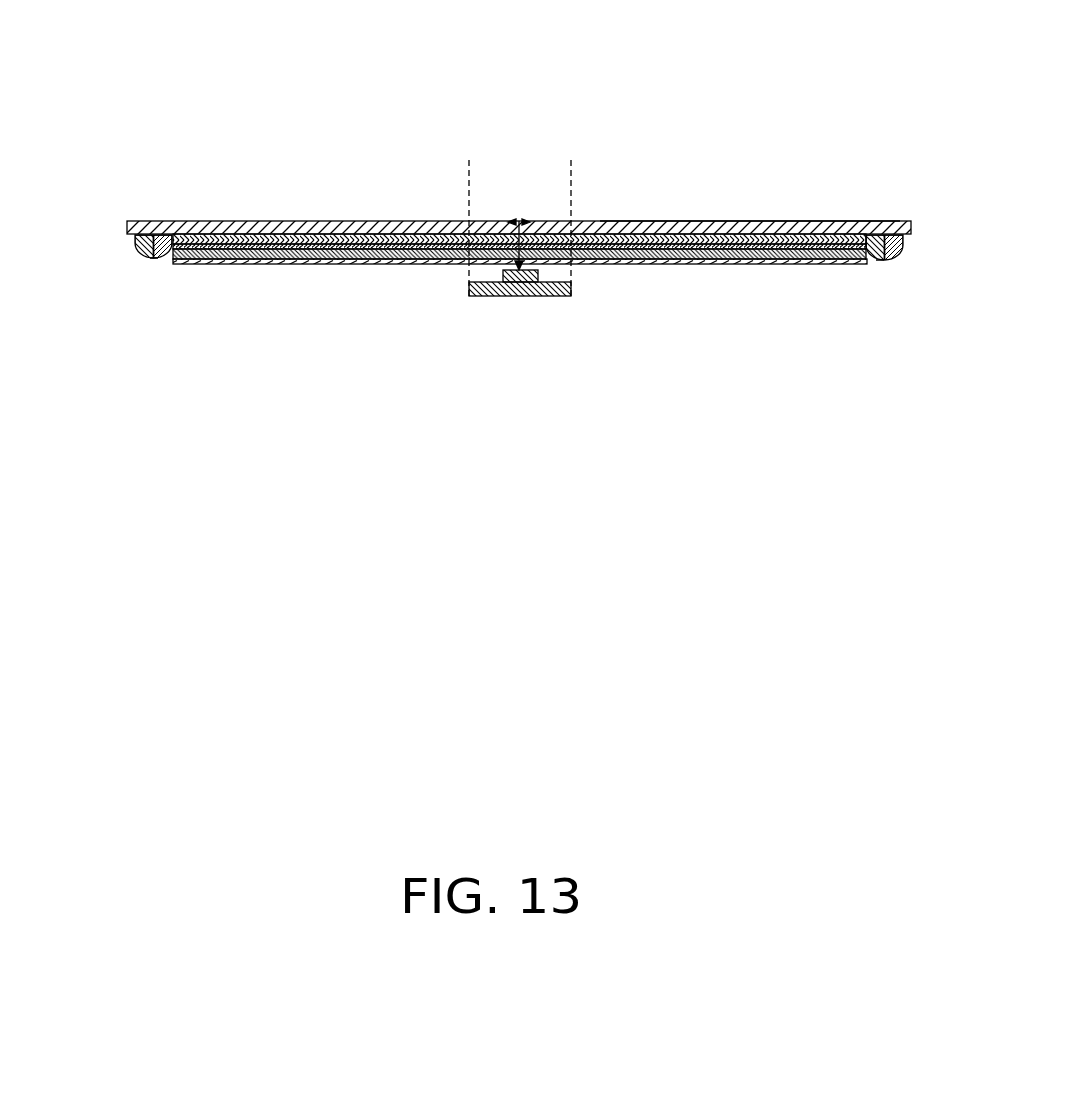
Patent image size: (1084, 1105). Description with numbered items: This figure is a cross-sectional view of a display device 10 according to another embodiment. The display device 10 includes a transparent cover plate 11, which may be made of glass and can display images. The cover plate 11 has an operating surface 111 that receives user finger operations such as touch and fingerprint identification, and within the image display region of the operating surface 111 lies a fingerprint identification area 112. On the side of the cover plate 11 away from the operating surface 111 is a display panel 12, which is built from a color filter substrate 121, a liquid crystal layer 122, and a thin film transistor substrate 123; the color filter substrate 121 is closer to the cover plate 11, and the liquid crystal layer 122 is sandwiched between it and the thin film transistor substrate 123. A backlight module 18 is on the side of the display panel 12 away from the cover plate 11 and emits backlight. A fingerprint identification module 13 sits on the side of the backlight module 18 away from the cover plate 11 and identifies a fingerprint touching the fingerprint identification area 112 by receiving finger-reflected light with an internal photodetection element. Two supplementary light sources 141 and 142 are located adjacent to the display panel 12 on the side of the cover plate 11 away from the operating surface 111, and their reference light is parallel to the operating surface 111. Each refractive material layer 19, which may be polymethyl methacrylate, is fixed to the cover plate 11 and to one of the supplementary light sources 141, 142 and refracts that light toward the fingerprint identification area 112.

The display device 10 is at (500, 53).
The cover plate 11 is at (908, 222).
The operating surface 111 is at (784, 222).
The fingerprint identification area 112 is at (523, 208).
The display panel 12 is at (515, 319).
The color filter substrate 121 is at (207, 240).
The liquid crystal layer 122 is at (273, 247).
The thin film transistor substrate 123 is at (168, 345).
The fingerprint identification module 13 is at (515, 297).
The supplementary light source 141 is at (135, 251).
The supplementary light source 142 is at (905, 253).
The backlight module 18 is at (432, 263).
The refractive material layer 19 is at (155, 258).